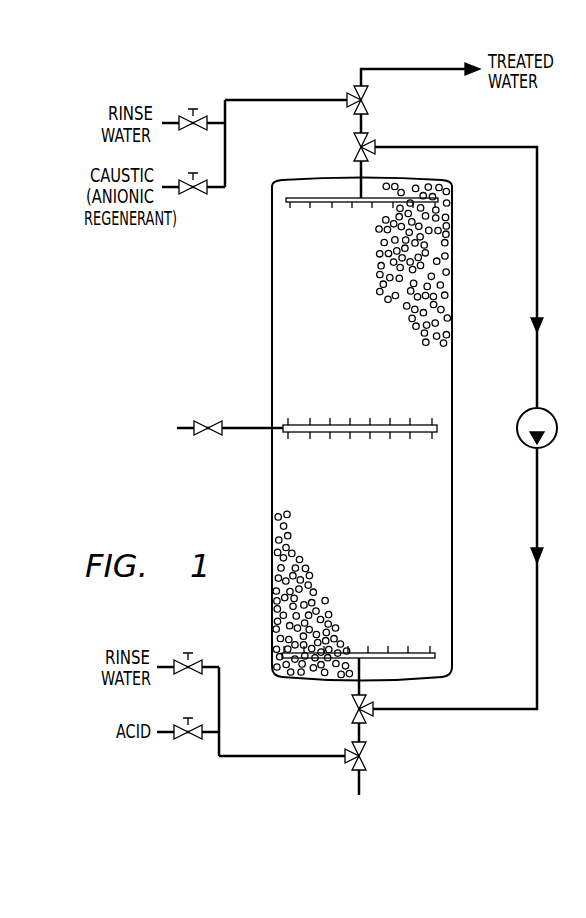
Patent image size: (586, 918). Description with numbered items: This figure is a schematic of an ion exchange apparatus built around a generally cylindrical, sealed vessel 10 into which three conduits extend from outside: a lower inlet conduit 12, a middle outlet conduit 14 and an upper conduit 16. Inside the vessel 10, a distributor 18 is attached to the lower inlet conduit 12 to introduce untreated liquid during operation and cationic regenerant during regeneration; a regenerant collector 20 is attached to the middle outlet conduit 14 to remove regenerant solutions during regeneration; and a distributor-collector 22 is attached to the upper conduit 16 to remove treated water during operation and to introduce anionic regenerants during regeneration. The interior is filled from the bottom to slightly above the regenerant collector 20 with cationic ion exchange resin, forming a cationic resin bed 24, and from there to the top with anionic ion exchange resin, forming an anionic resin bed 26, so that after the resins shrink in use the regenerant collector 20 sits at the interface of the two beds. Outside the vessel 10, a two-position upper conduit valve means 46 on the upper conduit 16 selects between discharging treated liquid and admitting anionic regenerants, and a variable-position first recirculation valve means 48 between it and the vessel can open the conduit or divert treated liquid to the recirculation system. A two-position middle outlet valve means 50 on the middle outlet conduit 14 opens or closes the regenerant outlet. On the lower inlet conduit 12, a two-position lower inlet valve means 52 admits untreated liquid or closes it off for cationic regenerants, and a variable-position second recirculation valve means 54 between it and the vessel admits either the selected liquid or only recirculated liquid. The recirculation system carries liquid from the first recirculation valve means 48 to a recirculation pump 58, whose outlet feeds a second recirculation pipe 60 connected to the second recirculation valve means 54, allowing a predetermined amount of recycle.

The vessel 10 is at (454, 258).
The lower inlet conduit 12 is at (357, 690).
The middle outlet conduit 14 is at (248, 431).
The upper conduit 16 is at (364, 166).
The distributor 18 is at (397, 650).
The regenerant collector 20 is at (363, 423).
The distributor-collector 22 is at (321, 205).
The cationic resin bed 24 is at (373, 317).
The anionic resin bed 26 is at (373, 546).
The upper conduit valve means 46 is at (375, 101).
The first recirculation valve means 48 is at (352, 147).
The middle outlet valve means 50 is at (213, 420).
The lower inlet valve means 52 is at (372, 758).
The second recirculation valve means 54 is at (351, 713).
The recirculation pump 58 is at (524, 413).
The second recirculation pipe 60 is at (537, 620).